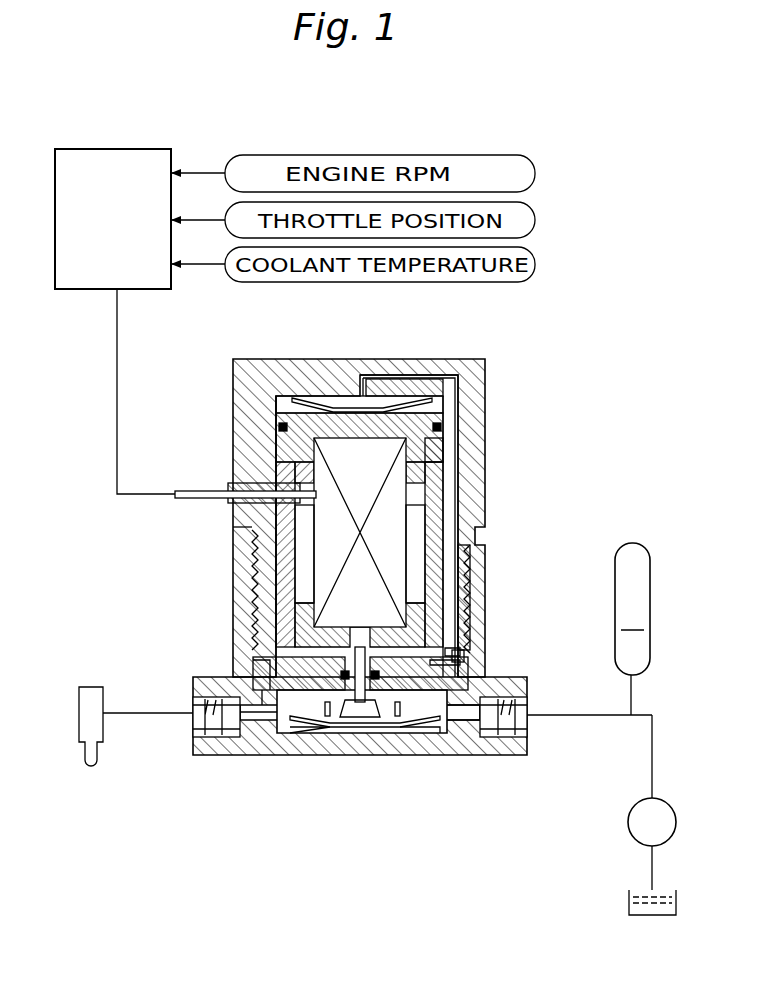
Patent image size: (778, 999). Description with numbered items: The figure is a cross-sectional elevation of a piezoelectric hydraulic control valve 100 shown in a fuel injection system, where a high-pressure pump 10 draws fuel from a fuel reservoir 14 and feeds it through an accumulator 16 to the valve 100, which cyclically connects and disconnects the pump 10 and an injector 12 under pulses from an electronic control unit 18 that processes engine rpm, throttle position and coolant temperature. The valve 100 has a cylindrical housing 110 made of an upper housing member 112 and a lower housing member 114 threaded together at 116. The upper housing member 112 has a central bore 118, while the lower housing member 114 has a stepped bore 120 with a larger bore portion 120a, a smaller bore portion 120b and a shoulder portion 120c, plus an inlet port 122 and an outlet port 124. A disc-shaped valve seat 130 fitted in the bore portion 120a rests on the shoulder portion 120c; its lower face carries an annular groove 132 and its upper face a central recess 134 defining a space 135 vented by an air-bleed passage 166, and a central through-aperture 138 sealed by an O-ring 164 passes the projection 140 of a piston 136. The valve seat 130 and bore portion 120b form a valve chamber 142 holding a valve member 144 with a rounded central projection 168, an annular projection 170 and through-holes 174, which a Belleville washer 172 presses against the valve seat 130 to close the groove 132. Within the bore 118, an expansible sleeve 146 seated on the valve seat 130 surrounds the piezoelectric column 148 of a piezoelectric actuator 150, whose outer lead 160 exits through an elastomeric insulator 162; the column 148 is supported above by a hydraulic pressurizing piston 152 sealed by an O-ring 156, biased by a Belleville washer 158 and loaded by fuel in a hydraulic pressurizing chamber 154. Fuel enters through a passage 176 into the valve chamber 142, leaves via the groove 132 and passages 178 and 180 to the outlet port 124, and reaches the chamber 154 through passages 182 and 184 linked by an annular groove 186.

The high-pressure pump 10 is at (630, 840).
The injector 12 is at (86, 740).
The fuel reservoir 14 is at (638, 918).
The accumulator 16 is at (632, 629).
The electronic control unit 18 is at (71, 292).
The piezoelectric hydraulic control valve 100 is at (603, 428).
The housing 110 is at (226, 532).
The upper housing member 112 is at (467, 362).
The lower housing member 114 is at (458, 770).
The threaded connection 116 is at (252, 570).
The central bore 118 is at (282, 390).
The stepped bore 120 is at (528, 690).
The bore portion 120a is at (252, 660).
The bore portion 120b is at (270, 745).
The shoulder portion 120c is at (262, 690).
The inlet port 122 is at (522, 722).
The outlet port 124 is at (193, 715).
The valve seat 130 is at (508, 668).
The annular groove 132 is at (315, 748).
The central recess 134 is at (277, 608).
The space 135 is at (472, 657).
The piston 136 is at (418, 608).
The through-aperture 138 is at (375, 740).
The projection 140 is at (445, 630).
The valve chamber 142 is at (365, 745).
The valve member 144 is at (455, 750).
The expansible sleeve 146 is at (437, 488).
The piezoelectric column 148 is at (393, 520).
The piezoelectric actuator 150 is at (305, 520).
The hydraulic pressurizing piston 152 is at (432, 442).
The hydraulic pressurizing chamber 154 is at (345, 402).
The O-ring 156 is at (279, 428).
The Belleville washer 158 is at (313, 392).
The outer lead 160 is at (192, 491).
The elastomeric insulator 162 is at (222, 484).
The O-ring 164 is at (350, 748).
The air-bleed passage 166 is at (313, 653).
The central projection 168 is at (352, 740).
The annular projection 170 is at (408, 748).
The Belleville washer 172 is at (318, 740).
The through-holes 174 is at (420, 745).
The passage 176 is at (512, 760).
The passage 178 is at (233, 757).
The passage 180 is at (210, 757).
The passage 182 is at (452, 660).
The passage 184 is at (455, 408).
The annular groove 186 is at (467, 640).